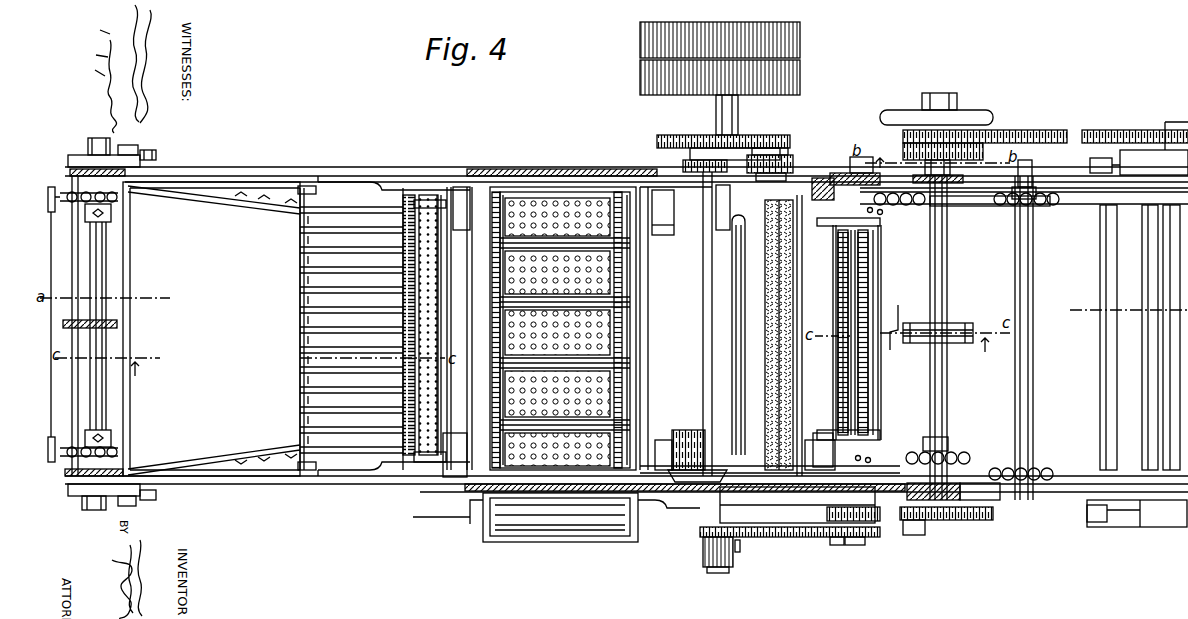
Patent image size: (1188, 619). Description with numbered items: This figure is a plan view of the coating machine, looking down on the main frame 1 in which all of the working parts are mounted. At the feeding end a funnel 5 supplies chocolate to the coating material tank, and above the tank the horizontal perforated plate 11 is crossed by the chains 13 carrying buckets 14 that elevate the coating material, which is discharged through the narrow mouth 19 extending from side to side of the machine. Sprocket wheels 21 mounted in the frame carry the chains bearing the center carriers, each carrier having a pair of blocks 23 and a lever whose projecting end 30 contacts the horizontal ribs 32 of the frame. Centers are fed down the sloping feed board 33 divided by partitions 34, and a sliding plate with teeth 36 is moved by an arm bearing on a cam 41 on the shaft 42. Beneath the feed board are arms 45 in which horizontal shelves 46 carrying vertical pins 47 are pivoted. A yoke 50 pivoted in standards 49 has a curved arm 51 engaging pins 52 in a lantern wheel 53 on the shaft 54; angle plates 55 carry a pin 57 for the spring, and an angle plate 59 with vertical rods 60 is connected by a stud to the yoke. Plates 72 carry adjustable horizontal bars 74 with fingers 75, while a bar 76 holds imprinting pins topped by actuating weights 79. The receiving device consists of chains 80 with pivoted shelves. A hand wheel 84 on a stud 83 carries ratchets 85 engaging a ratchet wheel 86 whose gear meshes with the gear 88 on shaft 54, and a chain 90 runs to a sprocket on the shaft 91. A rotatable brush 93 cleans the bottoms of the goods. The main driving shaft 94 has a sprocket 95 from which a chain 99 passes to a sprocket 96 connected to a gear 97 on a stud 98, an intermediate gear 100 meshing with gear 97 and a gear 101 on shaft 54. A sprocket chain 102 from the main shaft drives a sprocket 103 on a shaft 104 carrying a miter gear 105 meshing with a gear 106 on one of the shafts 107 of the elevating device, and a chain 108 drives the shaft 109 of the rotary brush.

The main frame 1 is at (618, 338).
The funnel 5 is at (556, 528).
The horizontal perforated plate 11 is at (640, 316).
The chains 13 is at (498, 270).
The buckets 14 is at (498, 320).
The narrow mouth 19 is at (732, 348).
The sprocket wheels 21 is at (114, 210).
The blocks 23 is at (308, 187).
The lever end 30 is at (290, 187).
The horizontal ribs 32 is at (408, 182).
The sloping feed board 33 is at (211, 329).
The partitions 34 is at (335, 329).
The teeth 36 is at (403, 238).
The cam 41 is at (130, 330).
The shaft 42 is at (108, 272).
The arms 45 is at (430, 205).
The horizontal shelves 46 is at (437, 268).
The vertical pins 47 is at (440, 412).
The standards 49 is at (810, 170).
The yoke 50 is at (880, 292).
The curved arm 51 is at (899, 325).
The pins 52 is at (975, 328).
The lantern wheel 53 is at (893, 340).
The shaft 54 is at (947, 280).
The angle plates 55 is at (872, 182).
The pin 57 is at (876, 222).
The angle plate 59 is at (840, 432).
The vertical rods 60 is at (887, 208).
The plates 72 is at (842, 240).
The horizontal bars 74 is at (860, 370).
The fingers 75 is at (860, 385).
The bar 76 is at (858, 300).
The actuating weights 79 is at (858, 322).
The chains 80 is at (1024, 331).
The stud 83 is at (938, 93).
The hand wheel 84 is at (985, 122).
The ratchets 85 is at (905, 152).
The ratchet wheel 86 is at (880, 160).
The gear 88 is at (950, 168).
The chain 90 is at (1135, 124).
The shaft 91 is at (1168, 122).
The rotatable brush 93 is at (773, 335).
The main driving shaft 94 is at (718, 584).
The sprocket 95 is at (740, 547).
The sprocket 96 is at (852, 524).
The gear 97 is at (832, 540).
The stud 98 is at (848, 545).
The chain 99 is at (768, 538).
The intermediate gear 100 is at (905, 530).
The gear 101 is at (1043, 513).
The sprocket chain 102 is at (690, 166).
The sprocket 103 is at (674, 215).
The shaft 104 is at (703, 293).
The miter gear 105 is at (770, 463).
The gear 106 is at (690, 440).
The shafts 107 is at (698, 458).
The chain 108 is at (772, 150).
The shaft 109 is at (775, 160).